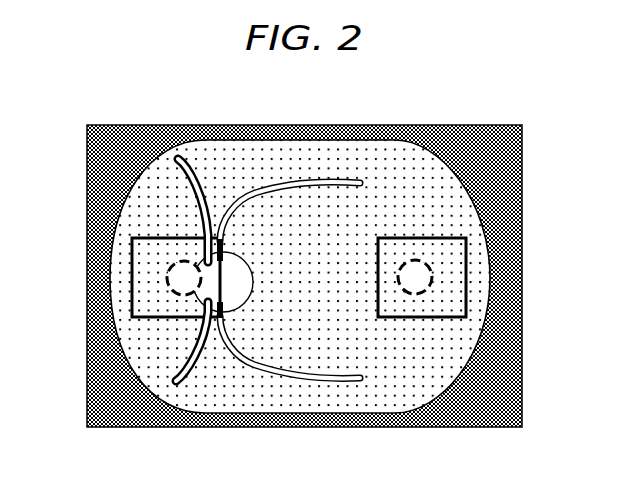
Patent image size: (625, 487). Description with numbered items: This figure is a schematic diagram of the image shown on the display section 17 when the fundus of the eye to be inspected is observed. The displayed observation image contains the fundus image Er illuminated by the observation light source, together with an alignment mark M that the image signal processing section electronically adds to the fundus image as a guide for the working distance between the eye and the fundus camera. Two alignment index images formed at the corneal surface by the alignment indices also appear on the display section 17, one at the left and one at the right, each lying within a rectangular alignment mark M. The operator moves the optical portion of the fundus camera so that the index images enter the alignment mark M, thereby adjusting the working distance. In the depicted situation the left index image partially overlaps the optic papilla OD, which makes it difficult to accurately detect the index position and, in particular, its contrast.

The display section 17 is at (438, 126).
The fundus image Er is at (264, 168).
The alignment mark M is at (155, 317).
The optic papilla OD is at (248, 306).